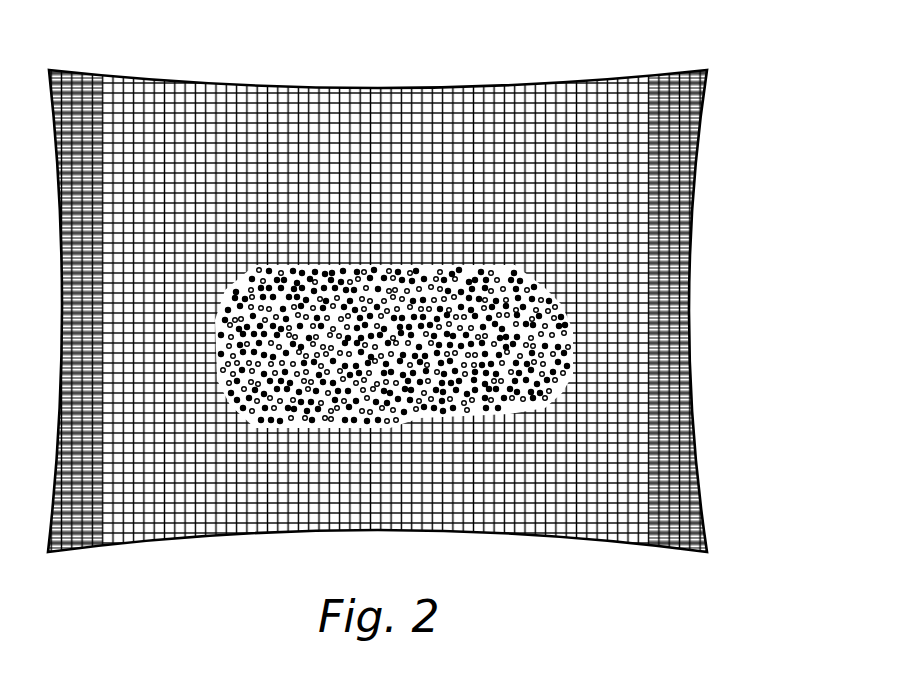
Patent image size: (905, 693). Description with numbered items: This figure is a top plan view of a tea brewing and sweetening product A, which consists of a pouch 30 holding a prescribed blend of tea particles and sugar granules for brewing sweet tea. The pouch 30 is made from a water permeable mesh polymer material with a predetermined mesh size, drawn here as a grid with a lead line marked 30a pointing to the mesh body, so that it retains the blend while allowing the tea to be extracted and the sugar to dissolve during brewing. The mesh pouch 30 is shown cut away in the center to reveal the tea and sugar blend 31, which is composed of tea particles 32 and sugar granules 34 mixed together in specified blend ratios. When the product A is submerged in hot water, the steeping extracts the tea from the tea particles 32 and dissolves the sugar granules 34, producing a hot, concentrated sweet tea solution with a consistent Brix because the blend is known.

The pouch 30 is at (425, 310).
The mesh openings 30a is at (617, 487).
The tea and sugar blend 31 is at (503, 215).
The tea particles 32 is at (520, 292).
The sugar granules 34 is at (565, 328).
The tea brewing and sweetening product A is at (529, 83).